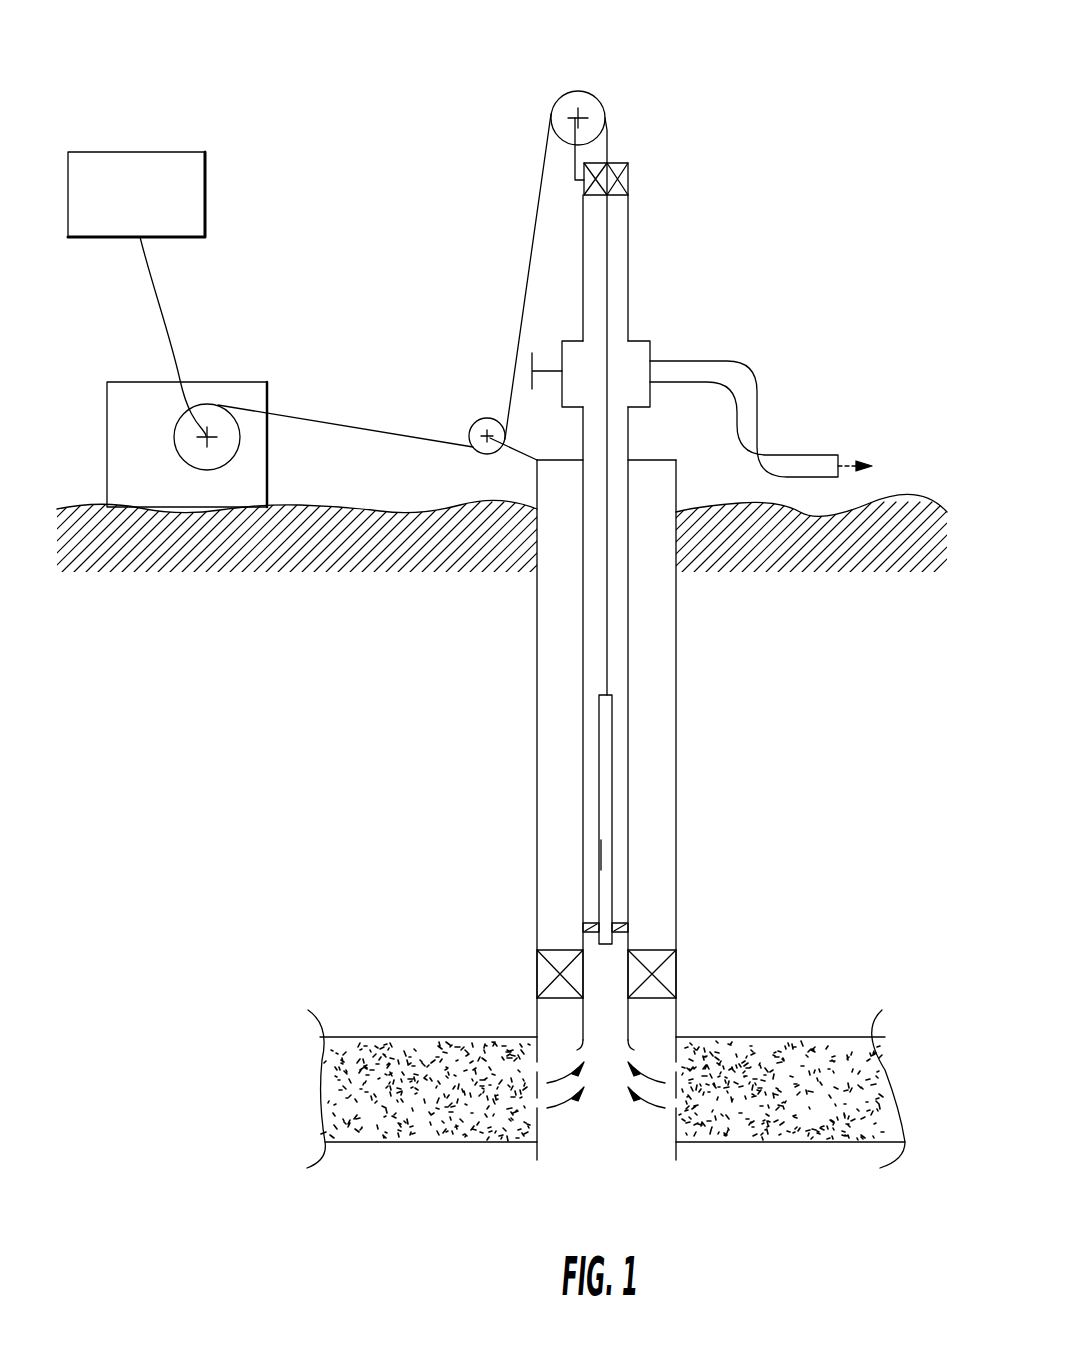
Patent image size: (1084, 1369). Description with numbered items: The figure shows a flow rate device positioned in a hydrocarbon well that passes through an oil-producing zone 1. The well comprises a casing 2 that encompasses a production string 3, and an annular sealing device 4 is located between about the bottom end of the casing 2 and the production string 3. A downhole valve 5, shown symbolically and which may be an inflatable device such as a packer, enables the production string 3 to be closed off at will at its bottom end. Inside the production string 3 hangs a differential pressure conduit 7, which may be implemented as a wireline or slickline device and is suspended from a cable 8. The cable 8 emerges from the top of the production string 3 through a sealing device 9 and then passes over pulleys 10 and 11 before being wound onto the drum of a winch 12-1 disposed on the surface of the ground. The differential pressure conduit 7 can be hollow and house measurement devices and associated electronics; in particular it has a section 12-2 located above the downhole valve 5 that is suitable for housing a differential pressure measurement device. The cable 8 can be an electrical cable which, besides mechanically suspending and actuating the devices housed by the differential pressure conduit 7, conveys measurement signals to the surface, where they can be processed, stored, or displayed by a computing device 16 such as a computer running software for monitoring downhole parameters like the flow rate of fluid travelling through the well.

The oil-producing zone 1 is at (422, 1060).
The casing 2 is at (676, 790).
The production string 3 is at (628, 703).
The annular sealing device 4 is at (658, 957).
The downhole valve 5 is at (617, 923).
The differential pressure conduit 7 is at (612, 762).
The cable 8 is at (606, 626).
The sealing device 9 is at (628, 175).
The pulley 10 is at (572, 100).
The pulley 11 is at (487, 420).
The winch 12-1 is at (127, 382).
The section 12-2 is at (606, 855).
The computing device 16 is at (143, 168).